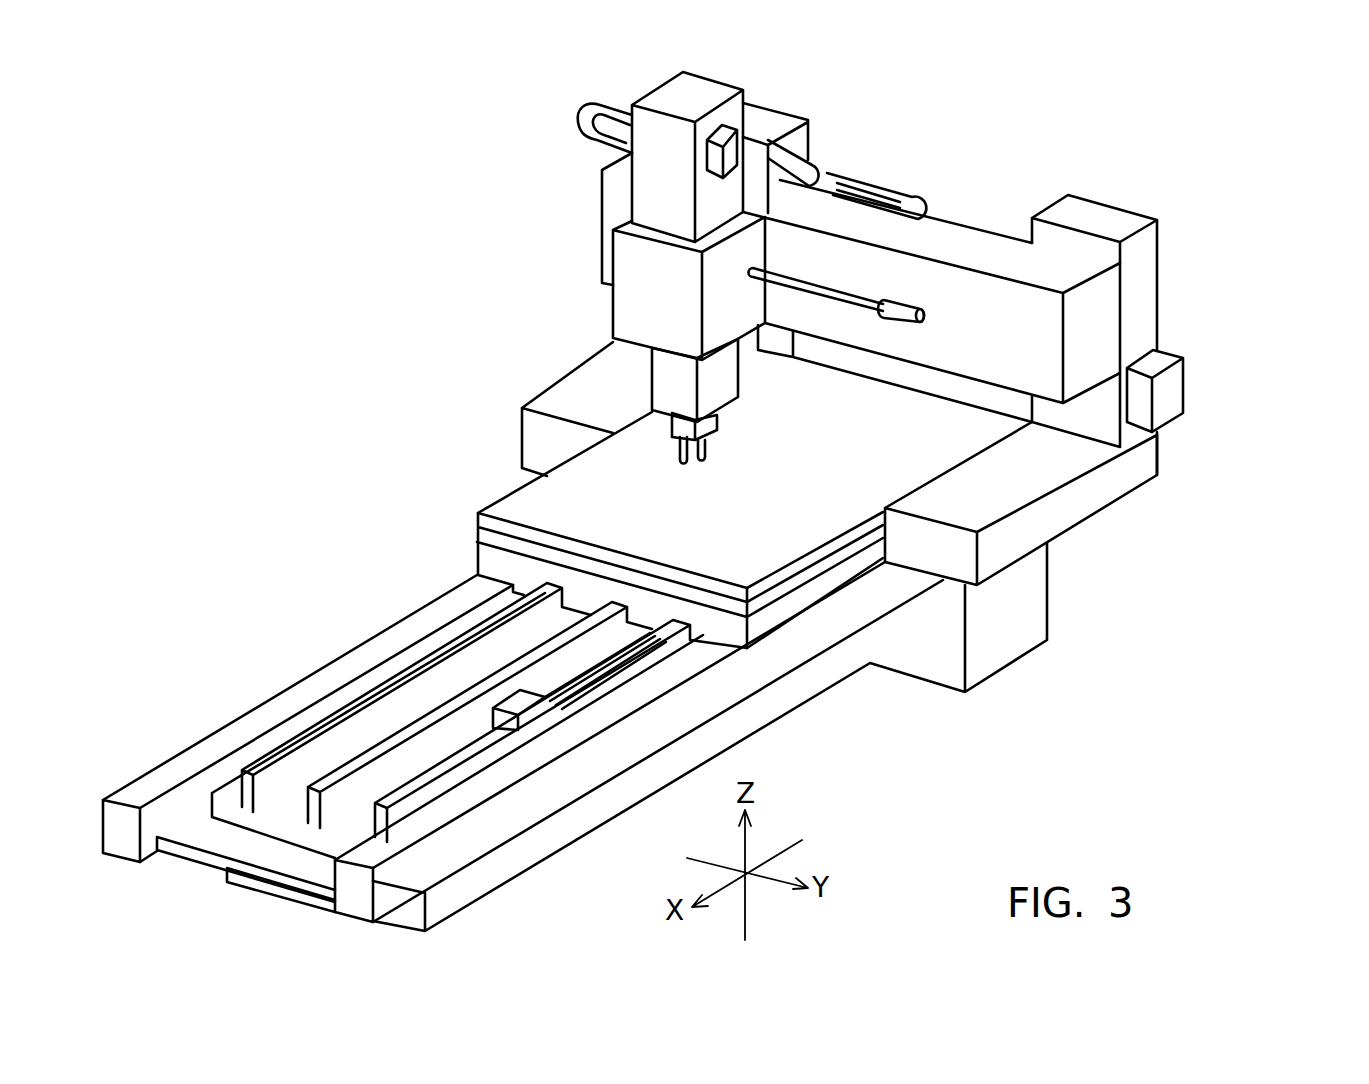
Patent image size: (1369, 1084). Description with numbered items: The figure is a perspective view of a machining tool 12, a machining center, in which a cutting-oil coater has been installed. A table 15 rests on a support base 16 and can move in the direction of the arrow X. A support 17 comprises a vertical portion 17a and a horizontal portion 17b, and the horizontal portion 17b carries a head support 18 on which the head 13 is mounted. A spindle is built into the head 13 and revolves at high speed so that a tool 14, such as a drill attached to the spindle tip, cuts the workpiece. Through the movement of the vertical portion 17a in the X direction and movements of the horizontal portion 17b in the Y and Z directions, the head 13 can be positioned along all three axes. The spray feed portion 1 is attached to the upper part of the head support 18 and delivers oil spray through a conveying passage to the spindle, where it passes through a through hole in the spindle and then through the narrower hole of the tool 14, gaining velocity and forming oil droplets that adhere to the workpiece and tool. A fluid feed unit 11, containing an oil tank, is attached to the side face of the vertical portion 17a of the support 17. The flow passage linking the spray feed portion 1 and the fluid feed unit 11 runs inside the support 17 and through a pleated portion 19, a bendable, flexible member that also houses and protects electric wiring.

The spray feed portion 1 is at (713, 160).
The fluid feed unit 11 is at (1180, 385).
The machining tool 12 is at (537, 322).
The head 13 is at (725, 382).
The tool 14 is at (708, 450).
The table 15 is at (733, 535).
The support base 16 is at (703, 700).
The support 17 is at (1193, 227).
The vertical portion 17a is at (1145, 293).
The horizontal portion 17b is at (940, 230).
The head support 18 is at (737, 253).
The pleated portion 19 is at (855, 187).